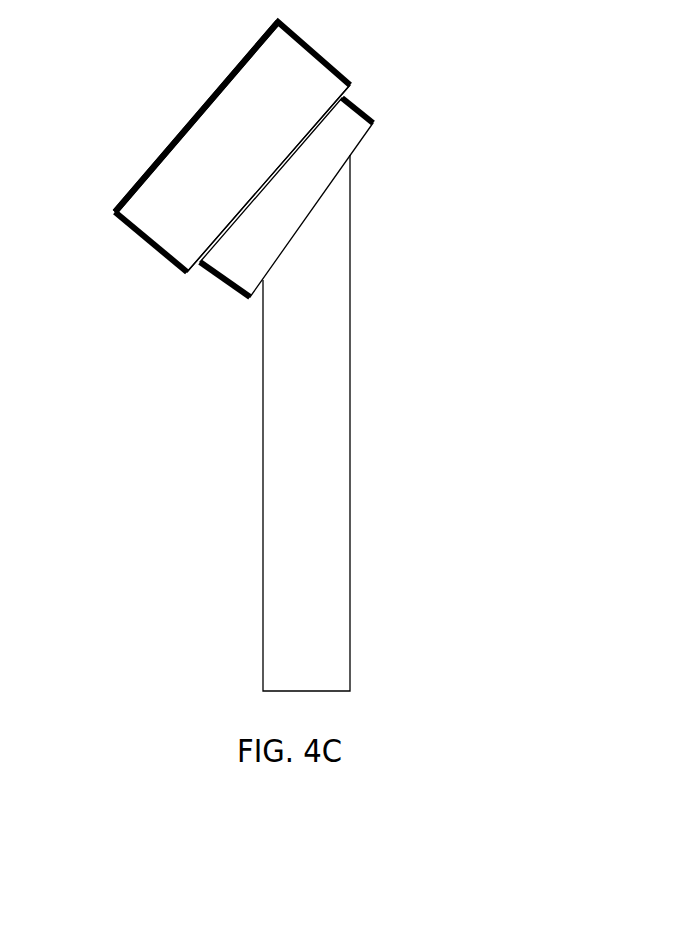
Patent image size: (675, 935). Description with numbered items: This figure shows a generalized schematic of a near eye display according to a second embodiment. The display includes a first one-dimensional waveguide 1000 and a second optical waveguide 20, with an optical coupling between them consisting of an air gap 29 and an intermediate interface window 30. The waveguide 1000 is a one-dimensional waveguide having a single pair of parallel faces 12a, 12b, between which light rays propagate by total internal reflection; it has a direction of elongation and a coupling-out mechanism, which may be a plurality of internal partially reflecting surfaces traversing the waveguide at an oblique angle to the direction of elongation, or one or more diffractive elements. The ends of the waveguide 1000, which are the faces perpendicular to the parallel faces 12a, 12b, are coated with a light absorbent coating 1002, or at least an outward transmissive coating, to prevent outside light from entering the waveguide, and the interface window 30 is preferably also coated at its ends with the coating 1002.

The first 1D waveguide 1000 is at (232, 147).
The parallel face 12a is at (183, 123).
The parallel face 12b is at (296, 146).
The air gap 29 is at (352, 97).
The intermediate interface window 30 is at (286, 197).
The second optical waveguide 20 is at (306, 423).
The light absorbent coating 1002 is at (340, 55).